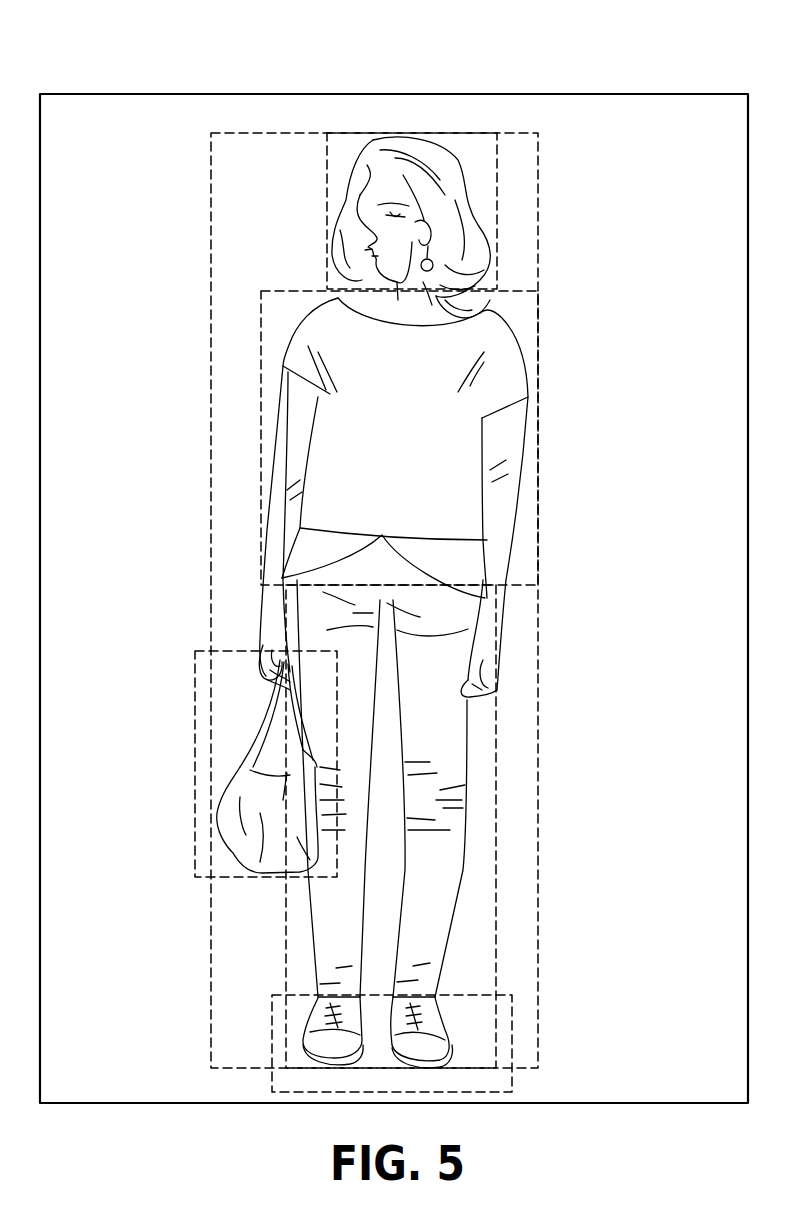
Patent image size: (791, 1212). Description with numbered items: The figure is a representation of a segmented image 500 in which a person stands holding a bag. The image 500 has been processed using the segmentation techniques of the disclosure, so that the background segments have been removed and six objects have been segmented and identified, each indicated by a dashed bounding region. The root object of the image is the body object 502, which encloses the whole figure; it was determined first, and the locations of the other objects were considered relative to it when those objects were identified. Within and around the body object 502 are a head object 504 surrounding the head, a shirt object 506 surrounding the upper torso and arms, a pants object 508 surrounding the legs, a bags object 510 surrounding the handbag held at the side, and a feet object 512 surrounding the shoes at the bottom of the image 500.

The image 500 is at (120, 58).
The body object 502 is at (211, 258).
The head object 504 is at (327, 204).
The shirt object 506 is at (261, 348).
The pants object 508 is at (496, 737).
The bags object 510 is at (195, 792).
The feet object 512 is at (512, 1092).